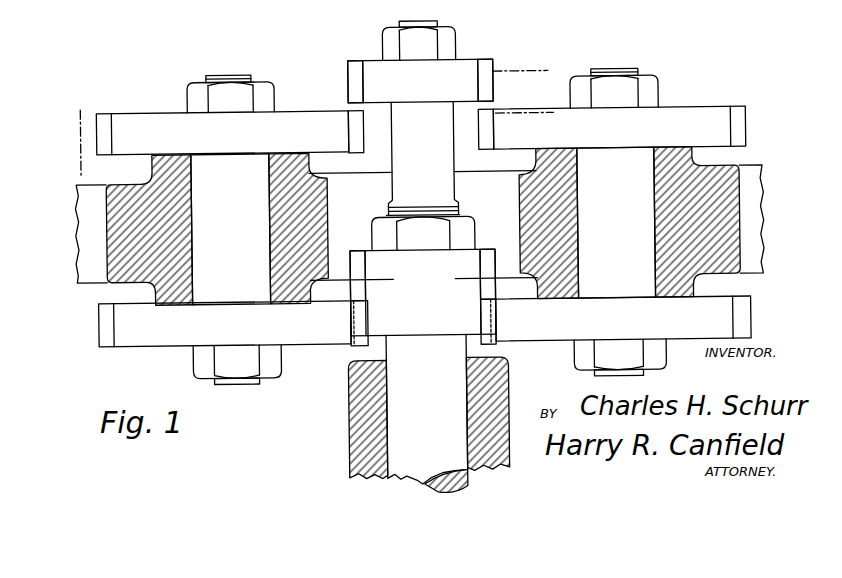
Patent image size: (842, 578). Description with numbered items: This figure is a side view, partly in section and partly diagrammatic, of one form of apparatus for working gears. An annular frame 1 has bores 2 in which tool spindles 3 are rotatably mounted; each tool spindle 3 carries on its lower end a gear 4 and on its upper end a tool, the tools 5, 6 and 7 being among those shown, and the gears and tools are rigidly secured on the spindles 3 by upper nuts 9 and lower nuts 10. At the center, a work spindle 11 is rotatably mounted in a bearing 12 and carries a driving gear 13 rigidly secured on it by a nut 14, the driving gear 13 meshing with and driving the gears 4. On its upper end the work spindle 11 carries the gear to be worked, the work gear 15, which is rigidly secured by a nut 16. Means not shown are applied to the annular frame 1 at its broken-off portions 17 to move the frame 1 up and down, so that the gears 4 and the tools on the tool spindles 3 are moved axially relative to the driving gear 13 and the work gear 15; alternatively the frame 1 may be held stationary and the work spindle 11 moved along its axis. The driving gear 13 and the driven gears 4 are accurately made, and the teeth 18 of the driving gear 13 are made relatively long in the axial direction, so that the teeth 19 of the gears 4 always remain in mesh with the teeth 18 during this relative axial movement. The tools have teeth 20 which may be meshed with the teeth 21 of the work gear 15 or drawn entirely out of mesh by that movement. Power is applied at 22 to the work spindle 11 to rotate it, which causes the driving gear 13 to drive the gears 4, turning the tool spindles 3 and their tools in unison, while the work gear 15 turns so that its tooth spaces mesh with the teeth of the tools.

The annular frame 1 is at (713, 231).
The bore 2 is at (193, 253).
The tool spindle 3 is at (228, 73).
The gear 4 is at (338, 12).
The tool 5 is at (77, 98).
The tool 6 is at (48, 128).
The tool 7 is at (222, 133).
The upper nut 9 is at (274, 101).
The lower nut 10 is at (283, 364).
The work spindle 11 is at (424, 293).
The bearing 12 is at (360, 401).
The driving gear 13 is at (423, 292).
The nut 14 is at (470, 232).
The work gear 15 is at (451, 86).
The nut 16 is at (458, 40).
The broken off portion 17 is at (77, 213).
The teeth 18 is at (488, 262).
The teeth 19 is at (488, 338).
The teeth 20 is at (359, 143).
The teeth 21 is at (350, 73).
The power application point 22 is at (405, 482).